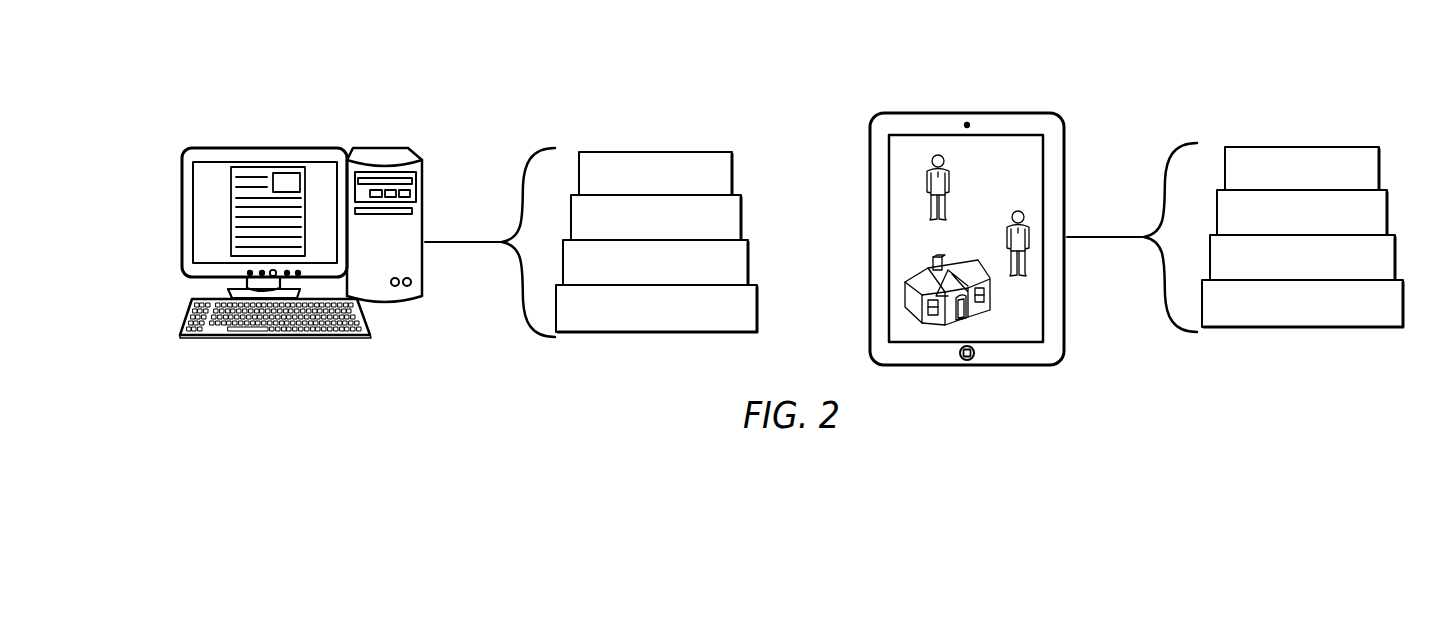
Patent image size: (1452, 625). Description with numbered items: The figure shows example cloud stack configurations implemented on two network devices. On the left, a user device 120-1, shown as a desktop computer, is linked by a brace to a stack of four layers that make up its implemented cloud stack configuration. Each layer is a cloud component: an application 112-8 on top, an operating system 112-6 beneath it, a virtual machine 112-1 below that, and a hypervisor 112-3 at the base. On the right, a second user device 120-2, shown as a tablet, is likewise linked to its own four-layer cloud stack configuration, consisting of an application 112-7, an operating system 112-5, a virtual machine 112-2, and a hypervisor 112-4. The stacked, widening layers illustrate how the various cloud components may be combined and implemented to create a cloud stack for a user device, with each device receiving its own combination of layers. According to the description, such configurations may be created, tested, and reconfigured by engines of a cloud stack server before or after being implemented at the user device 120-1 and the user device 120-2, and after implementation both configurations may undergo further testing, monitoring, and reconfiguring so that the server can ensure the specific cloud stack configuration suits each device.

The user device 120-1 is at (251, 101).
The user device 120-2 is at (935, 73).
The application 112-8 is at (705, 185).
The operating system 112-6 is at (705, 230).
The virtual machine 112-1 is at (705, 275).
The hypervisor 112-3 is at (705, 318).
The application 112-7 is at (1352, 180).
The operating system 112-5 is at (1352, 225).
The virtual machine 112-2 is at (1352, 270).
The hypervisor 112-4 is at (1352, 313).